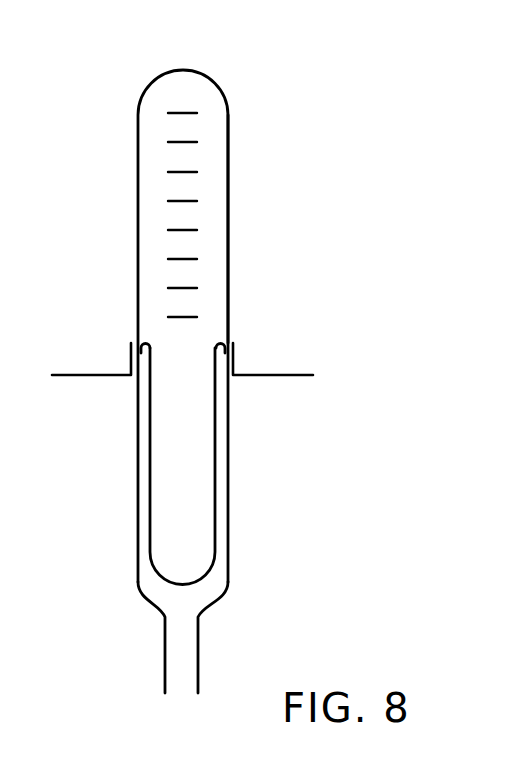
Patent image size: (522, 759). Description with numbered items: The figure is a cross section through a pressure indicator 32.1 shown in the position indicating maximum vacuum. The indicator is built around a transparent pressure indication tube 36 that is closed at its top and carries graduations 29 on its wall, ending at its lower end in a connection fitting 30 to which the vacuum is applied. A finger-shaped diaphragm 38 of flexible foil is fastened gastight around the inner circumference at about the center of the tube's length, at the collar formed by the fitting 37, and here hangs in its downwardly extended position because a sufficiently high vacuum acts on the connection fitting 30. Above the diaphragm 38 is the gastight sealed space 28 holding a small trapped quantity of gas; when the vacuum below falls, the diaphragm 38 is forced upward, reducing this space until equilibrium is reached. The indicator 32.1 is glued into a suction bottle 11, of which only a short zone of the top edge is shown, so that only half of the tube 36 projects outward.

The pressure indicator 32.1 is at (310, 53).
The pressure indication tube 36 is at (240, 167).
The space 28 is at (213, 238).
The scale graduations 29 is at (182, 219).
The connection fitting 37 is at (217, 340).
The suction bottle 11 is at (296, 372).
The diaphragm 38 is at (212, 490).
The connection fitting 30 is at (190, 661).